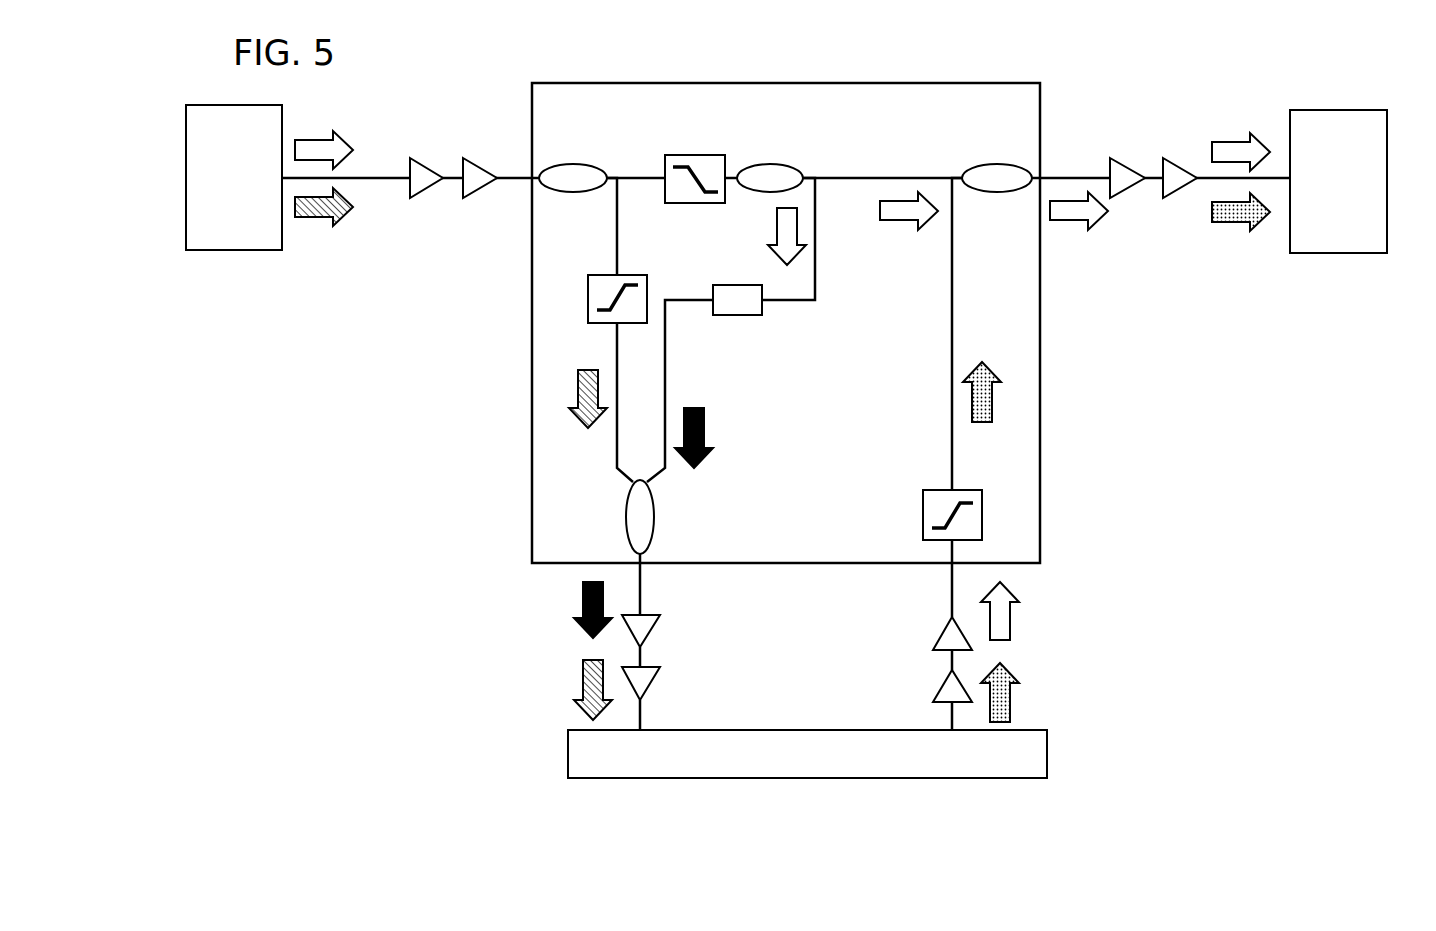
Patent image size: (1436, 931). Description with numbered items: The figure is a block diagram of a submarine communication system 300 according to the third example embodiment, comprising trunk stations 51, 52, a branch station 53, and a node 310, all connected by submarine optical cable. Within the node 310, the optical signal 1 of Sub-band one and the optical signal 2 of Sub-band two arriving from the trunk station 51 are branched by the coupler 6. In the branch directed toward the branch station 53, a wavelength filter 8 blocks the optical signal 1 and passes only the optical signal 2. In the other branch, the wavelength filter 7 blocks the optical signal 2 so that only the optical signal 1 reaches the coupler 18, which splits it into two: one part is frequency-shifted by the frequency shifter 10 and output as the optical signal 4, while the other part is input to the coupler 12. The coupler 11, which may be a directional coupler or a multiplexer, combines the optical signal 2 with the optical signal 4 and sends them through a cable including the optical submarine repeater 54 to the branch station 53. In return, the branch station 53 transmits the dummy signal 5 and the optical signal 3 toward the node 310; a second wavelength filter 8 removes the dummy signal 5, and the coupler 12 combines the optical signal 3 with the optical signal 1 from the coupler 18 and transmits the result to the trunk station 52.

The submarine communication system 300 is at (953, 52).
The node 310 is at (1040, 346).
The trunk station 51 is at (216, 250).
The trunk station 52 is at (1367, 255).
The branch station 53 is at (1048, 735).
The optical submarine repeater 54 is at (653, 637).
The optical signal 1 is at (306, 137).
The optical signal 2 is at (310, 218).
The optical signal 3 is at (1237, 230).
The optical signal 4 is at (705, 424).
The dummy signal 5 is at (1013, 627).
The coupler 6 is at (575, 163).
The wavelength filter 7 is at (678, 155).
The wavelength filter 8 is at (588, 300).
The frequency shifter 10 is at (723, 317).
The coupler 11 is at (654, 511).
The coupler 12 is at (988, 163).
The coupler 18 is at (785, 163).